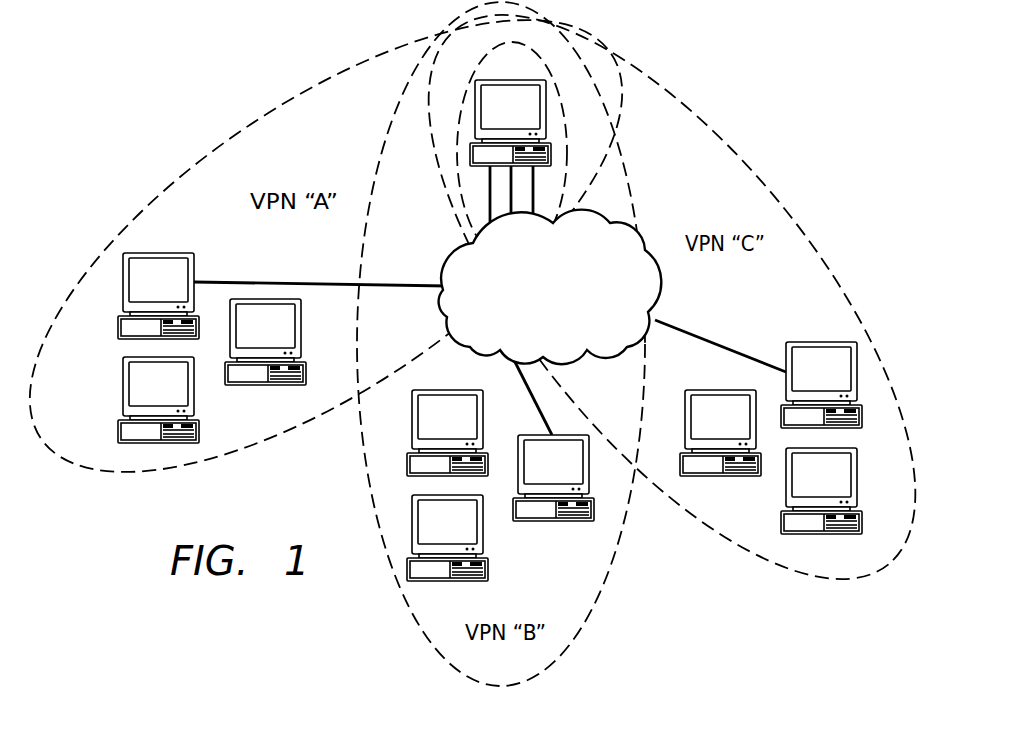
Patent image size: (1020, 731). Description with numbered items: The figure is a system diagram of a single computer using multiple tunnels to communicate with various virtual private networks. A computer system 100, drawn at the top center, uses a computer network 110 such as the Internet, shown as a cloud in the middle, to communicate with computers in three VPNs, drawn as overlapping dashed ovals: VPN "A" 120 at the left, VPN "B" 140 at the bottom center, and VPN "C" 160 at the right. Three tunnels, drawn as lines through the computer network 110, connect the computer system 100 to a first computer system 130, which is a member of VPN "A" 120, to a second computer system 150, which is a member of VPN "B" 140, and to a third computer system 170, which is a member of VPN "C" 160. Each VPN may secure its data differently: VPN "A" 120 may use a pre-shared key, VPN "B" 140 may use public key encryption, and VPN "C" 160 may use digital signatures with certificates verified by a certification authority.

The computer system 100 is at (532, 113).
The computer network 110 is at (664, 290).
The VPN "A" 120 is at (228, 141).
The first computer system 130 is at (195, 270).
The VPN "B" 140 is at (608, 570).
The second computer system 150 is at (553, 523).
The VPN "C" 160 is at (775, 191).
The third computer system 170 is at (820, 342).